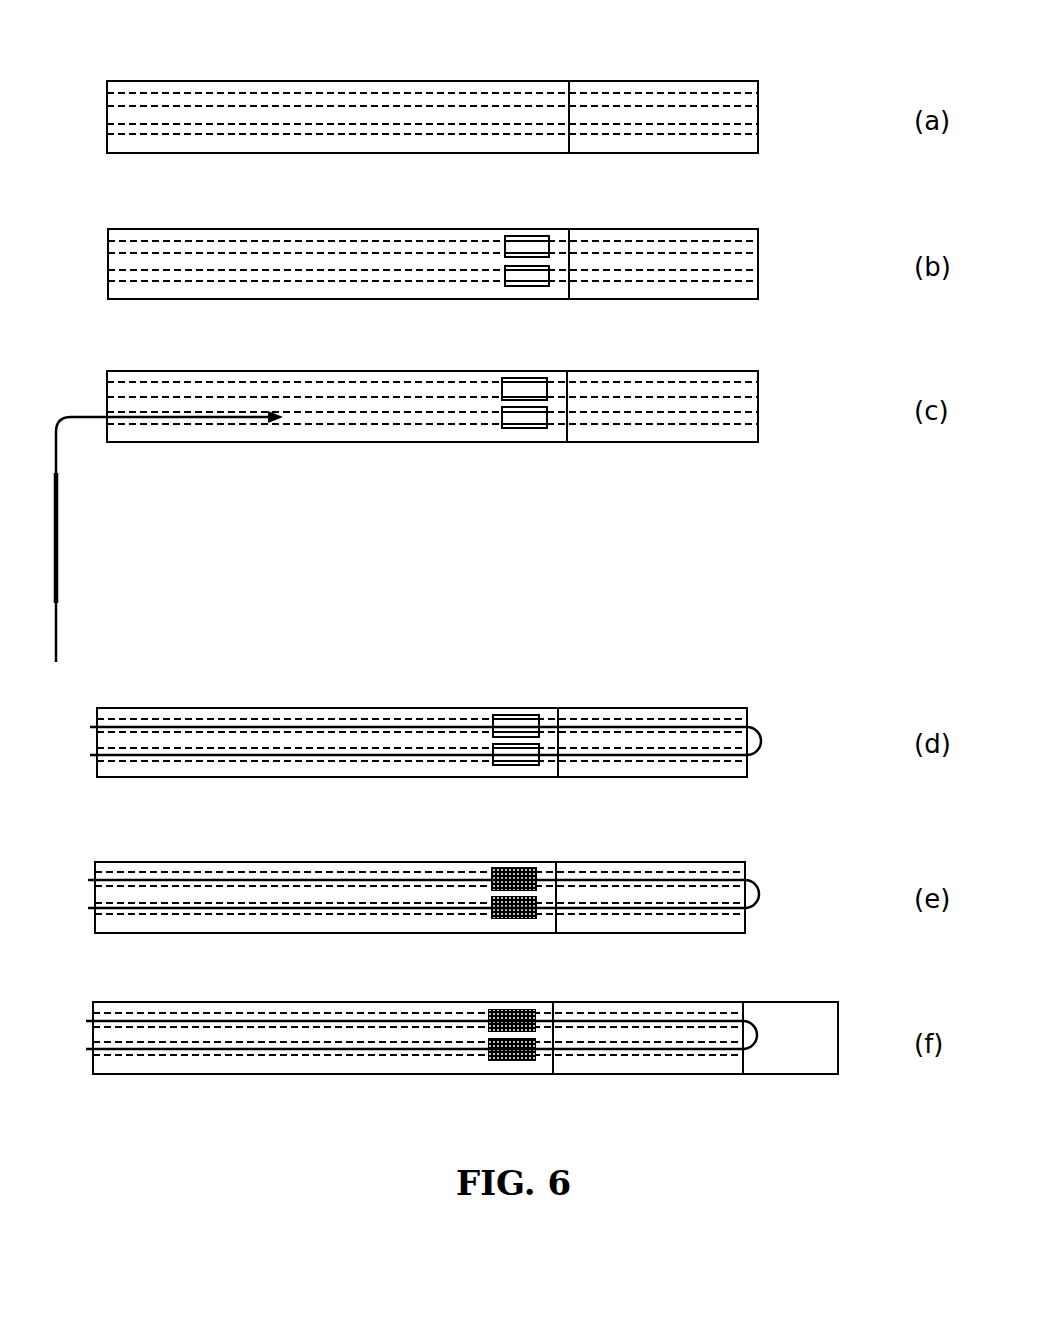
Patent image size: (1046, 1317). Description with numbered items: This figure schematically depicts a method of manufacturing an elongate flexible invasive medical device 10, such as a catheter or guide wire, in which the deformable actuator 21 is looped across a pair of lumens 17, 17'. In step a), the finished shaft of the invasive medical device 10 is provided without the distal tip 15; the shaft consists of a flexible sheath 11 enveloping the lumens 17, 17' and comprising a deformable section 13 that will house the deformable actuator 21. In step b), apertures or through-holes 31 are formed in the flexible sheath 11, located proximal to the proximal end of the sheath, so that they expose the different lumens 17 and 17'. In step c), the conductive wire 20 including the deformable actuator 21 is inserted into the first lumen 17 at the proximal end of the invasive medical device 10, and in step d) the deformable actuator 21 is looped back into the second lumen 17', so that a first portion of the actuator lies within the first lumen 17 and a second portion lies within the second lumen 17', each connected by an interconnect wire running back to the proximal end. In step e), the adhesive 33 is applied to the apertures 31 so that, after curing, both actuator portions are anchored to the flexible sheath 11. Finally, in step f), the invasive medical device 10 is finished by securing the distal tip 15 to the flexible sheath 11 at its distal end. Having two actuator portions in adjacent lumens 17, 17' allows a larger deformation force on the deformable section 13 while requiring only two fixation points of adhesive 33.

The invasive medical device 10 is at (520, 1141).
The flexible sheath 11 is at (327, 81).
The deformable section 13 is at (660, 81).
The distal tip 15 is at (798, 1020).
The first lumen 17 is at (425, 547).
The second lumen 17' is at (425, 523).
The conductive wire 20 is at (58, 630).
The deformable actuator 21 is at (58, 522).
The apertures 31 is at (528, 240).
The adhesive 33 is at (498, 867).